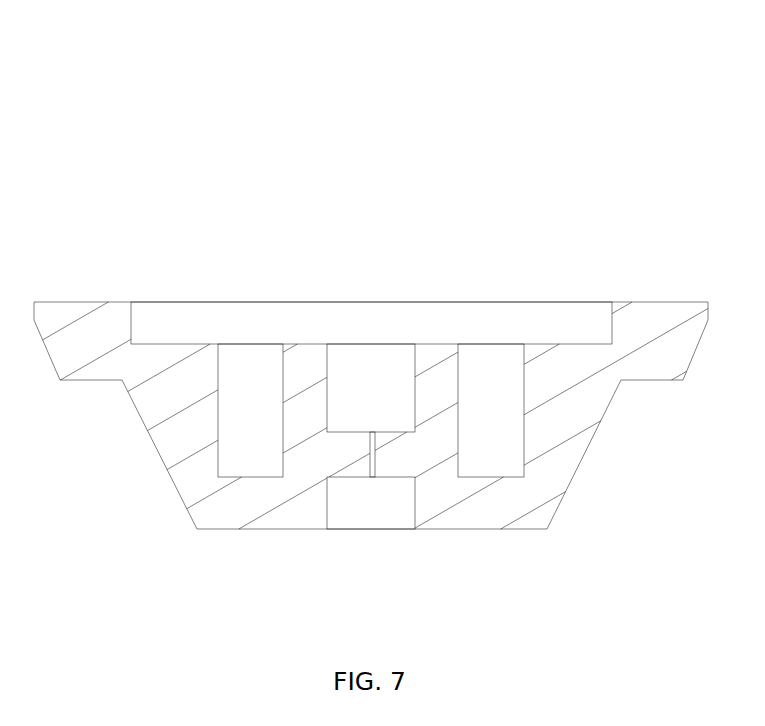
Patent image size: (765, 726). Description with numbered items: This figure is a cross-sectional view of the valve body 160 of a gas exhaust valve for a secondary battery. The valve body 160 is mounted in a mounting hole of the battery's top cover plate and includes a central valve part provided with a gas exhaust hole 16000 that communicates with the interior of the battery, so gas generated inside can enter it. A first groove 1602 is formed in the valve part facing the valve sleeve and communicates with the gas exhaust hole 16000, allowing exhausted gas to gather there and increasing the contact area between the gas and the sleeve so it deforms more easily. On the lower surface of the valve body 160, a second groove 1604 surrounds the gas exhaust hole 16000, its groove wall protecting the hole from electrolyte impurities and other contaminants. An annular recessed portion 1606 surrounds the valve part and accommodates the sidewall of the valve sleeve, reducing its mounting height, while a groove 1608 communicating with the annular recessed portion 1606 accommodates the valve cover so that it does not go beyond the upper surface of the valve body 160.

The valve body 160 is at (437, 362).
The groove 1608 is at (173, 322).
The annular recessed portion 1606 is at (265, 372).
The first groove 1602 is at (375, 377).
The gas exhaust hole 16000 is at (375, 461).
The second groove 1604 is at (363, 513).